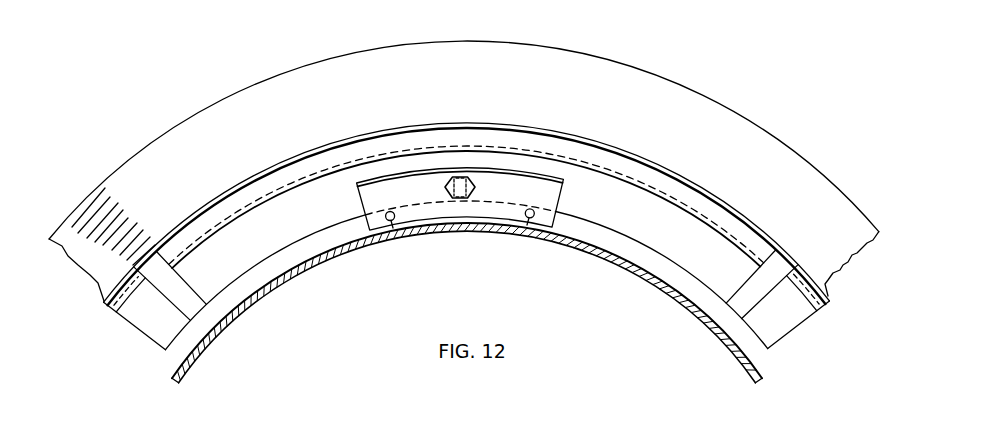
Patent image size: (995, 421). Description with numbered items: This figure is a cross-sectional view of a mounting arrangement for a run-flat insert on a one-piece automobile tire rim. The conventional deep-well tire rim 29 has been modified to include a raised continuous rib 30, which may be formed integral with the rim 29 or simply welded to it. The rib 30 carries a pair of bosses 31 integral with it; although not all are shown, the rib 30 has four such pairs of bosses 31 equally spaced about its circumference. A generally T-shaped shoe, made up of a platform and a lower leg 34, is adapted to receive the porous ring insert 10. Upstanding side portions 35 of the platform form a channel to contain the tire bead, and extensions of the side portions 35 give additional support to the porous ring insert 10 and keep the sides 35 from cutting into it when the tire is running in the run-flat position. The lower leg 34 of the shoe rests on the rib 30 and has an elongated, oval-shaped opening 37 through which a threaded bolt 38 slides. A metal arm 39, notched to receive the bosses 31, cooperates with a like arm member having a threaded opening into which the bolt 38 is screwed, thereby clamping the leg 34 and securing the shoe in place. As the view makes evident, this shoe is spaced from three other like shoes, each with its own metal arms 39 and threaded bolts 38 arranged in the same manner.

The insert 10 is at (799, 180).
The tire rim 29 is at (602, 253).
The rib 30 is at (771, 365).
The bosses 31 is at (395, 222).
The leg 34 is at (207, 272).
The side portions 35 is at (237, 205).
The opening 37 is at (475, 184).
The threaded bolt 38 is at (447, 186).
The metal arm 39 is at (560, 191).